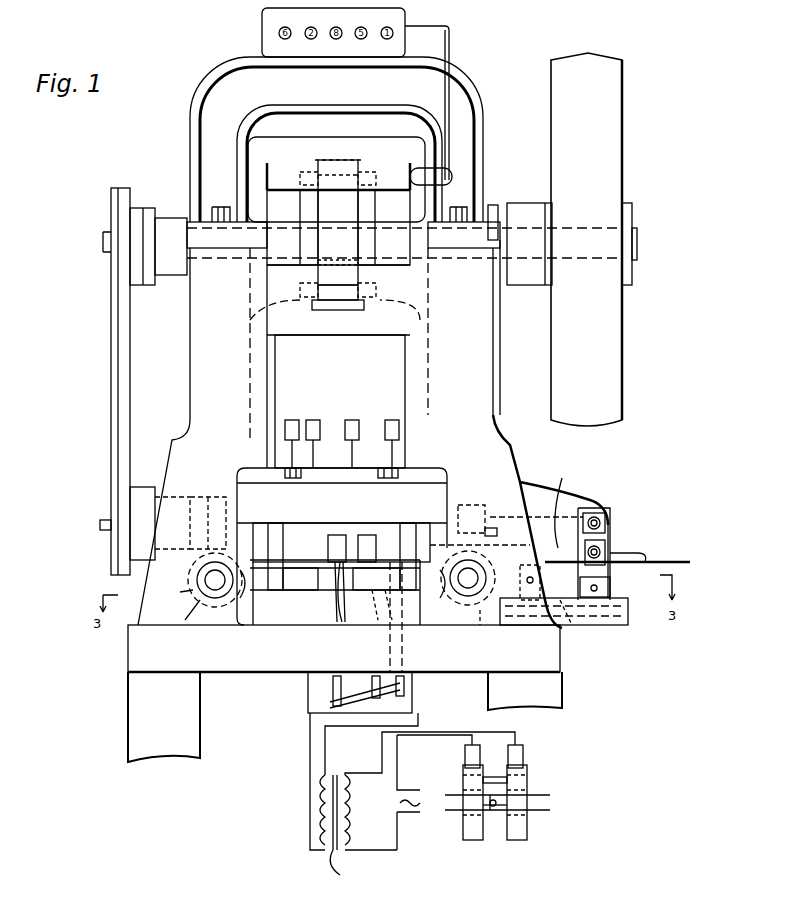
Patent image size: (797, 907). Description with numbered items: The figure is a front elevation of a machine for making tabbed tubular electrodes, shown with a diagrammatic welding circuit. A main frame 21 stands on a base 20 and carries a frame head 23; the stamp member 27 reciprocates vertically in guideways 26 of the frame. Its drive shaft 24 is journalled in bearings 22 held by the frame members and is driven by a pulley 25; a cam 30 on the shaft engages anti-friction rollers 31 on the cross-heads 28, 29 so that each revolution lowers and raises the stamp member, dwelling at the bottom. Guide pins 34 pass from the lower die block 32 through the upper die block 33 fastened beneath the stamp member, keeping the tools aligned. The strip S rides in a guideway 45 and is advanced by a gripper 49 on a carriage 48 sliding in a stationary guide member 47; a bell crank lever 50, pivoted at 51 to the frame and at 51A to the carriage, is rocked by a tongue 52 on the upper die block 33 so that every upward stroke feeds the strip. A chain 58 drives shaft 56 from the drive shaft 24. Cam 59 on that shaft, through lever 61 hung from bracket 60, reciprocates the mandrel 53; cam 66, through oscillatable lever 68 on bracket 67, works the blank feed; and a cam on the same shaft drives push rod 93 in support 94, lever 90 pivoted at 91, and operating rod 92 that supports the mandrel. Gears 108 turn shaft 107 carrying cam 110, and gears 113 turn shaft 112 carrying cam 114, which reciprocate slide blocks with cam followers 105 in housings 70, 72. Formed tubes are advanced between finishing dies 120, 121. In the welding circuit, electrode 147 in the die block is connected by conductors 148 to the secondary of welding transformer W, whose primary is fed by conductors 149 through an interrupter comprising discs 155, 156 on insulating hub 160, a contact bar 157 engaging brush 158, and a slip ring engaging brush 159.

The base 20 is at (232, 675).
The main frame 21 is at (205, 345).
The bearings 22 is at (212, 222).
The frame head 23 is at (207, 148).
The drive shaft 24 is at (103, 248).
The pulley 25 is at (605, 130).
The guideways 26 is at (335, 246).
The stamp member 27 is at (333, 485).
The cross-head 28 is at (374, 150).
The cross-head 29 is at (332, 332).
The cam 30 is at (340, 208).
The anti-friction rollers 31 is at (333, 175).
The lower die block 32 is at (300, 618).
The upper die block 33 is at (341, 533).
The guide pins 34 is at (270, 585).
The guideway 45 is at (565, 545).
The stationary guide member 47 is at (590, 625).
The carriage 48 is at (610, 622).
The gripper 49 is at (568, 503).
The bell crank lever 50 is at (525, 480).
The pivot 51 is at (600, 515).
The pivot 51A is at (600, 586).
The tongue 52 is at (445, 510).
The mandrel 53 is at (328, 570).
The shaft 56 is at (196, 497).
The chain 58 is at (122, 333).
The cam 59 is at (372, 470).
The stationary bracket 60 is at (392, 420).
The lever 61 is at (353, 420).
The cam 66 is at (308, 470).
The bracket 67 is at (290, 420).
The oscillatable lever 68 is at (314, 420).
The housing 70 is at (300, 579).
The housing 72 is at (376, 579).
The lever 90 is at (333, 700).
The pivot 91 is at (382, 695).
The operating rod 92 is at (330, 687).
The push rod 93 is at (390, 648).
The support 94 is at (375, 605).
The cam follower 105 is at (470, 628).
The shaft 107 is at (210, 588).
The gears 108 is at (190, 580).
The cam 110 is at (170, 593).
The shaft 112 is at (480, 578).
The gears 113 is at (506, 536).
The cam 114 is at (497, 626).
The finishing die 120 is at (342, 601).
The finishing die 121 is at (348, 528).
The welding electrode 147 is at (365, 535).
The conductors 148 is at (310, 760).
The conductors 149 is at (413, 792).
The disc 155 is at (470, 840).
The disc 156 is at (518, 840).
The contact bar 157 is at (490, 775).
The brush 158 is at (465, 757).
The brush 159 is at (525, 755).
The hub 160 is at (500, 810).
The strip S is at (645, 560).
The welding transformer W is at (340, 865).